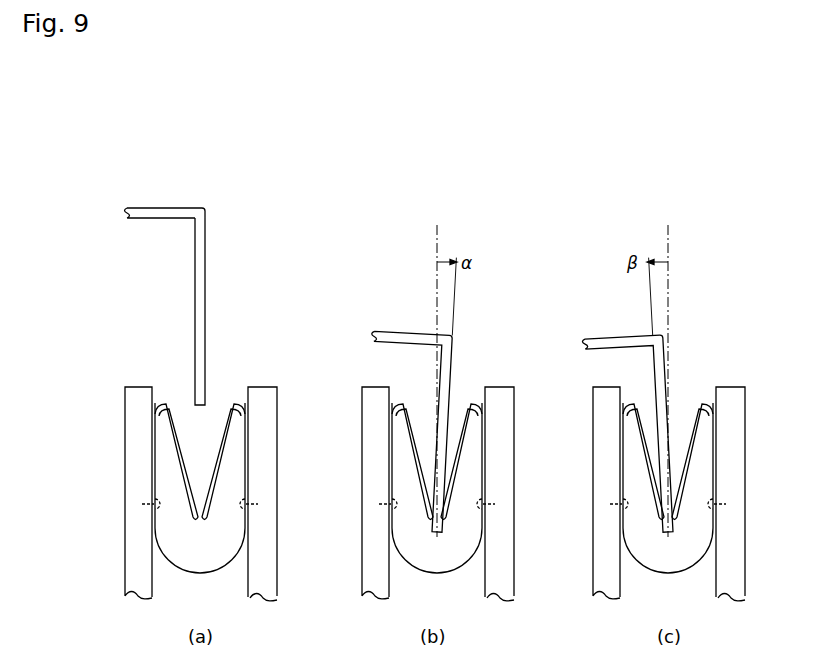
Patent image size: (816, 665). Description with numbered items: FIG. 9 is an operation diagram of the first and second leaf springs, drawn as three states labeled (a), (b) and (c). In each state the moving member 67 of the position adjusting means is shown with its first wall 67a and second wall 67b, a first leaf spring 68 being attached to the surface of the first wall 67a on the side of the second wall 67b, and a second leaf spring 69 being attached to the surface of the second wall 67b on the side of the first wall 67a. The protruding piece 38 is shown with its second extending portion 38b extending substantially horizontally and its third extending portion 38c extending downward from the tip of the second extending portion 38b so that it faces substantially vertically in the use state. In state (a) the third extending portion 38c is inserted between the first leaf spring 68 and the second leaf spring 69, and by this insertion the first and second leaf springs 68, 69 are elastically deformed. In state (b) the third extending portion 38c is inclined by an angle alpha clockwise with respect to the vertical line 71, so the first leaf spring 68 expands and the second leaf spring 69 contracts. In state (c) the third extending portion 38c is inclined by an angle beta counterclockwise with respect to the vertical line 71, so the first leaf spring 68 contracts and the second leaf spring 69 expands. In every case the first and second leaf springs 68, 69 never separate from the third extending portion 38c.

The protruding piece 38 is at (205, 237).
The second extending portion 38b is at (170, 207).
The third extending portion 38c is at (207, 283).
The moving member 67 is at (133, 540).
The first wall 67a is at (270, 410).
The second wall 67b is at (138, 452).
The first leaf spring 68 is at (232, 399).
The second leaf spring 69 is at (168, 399).
The vertical line 71 is at (434, 233).